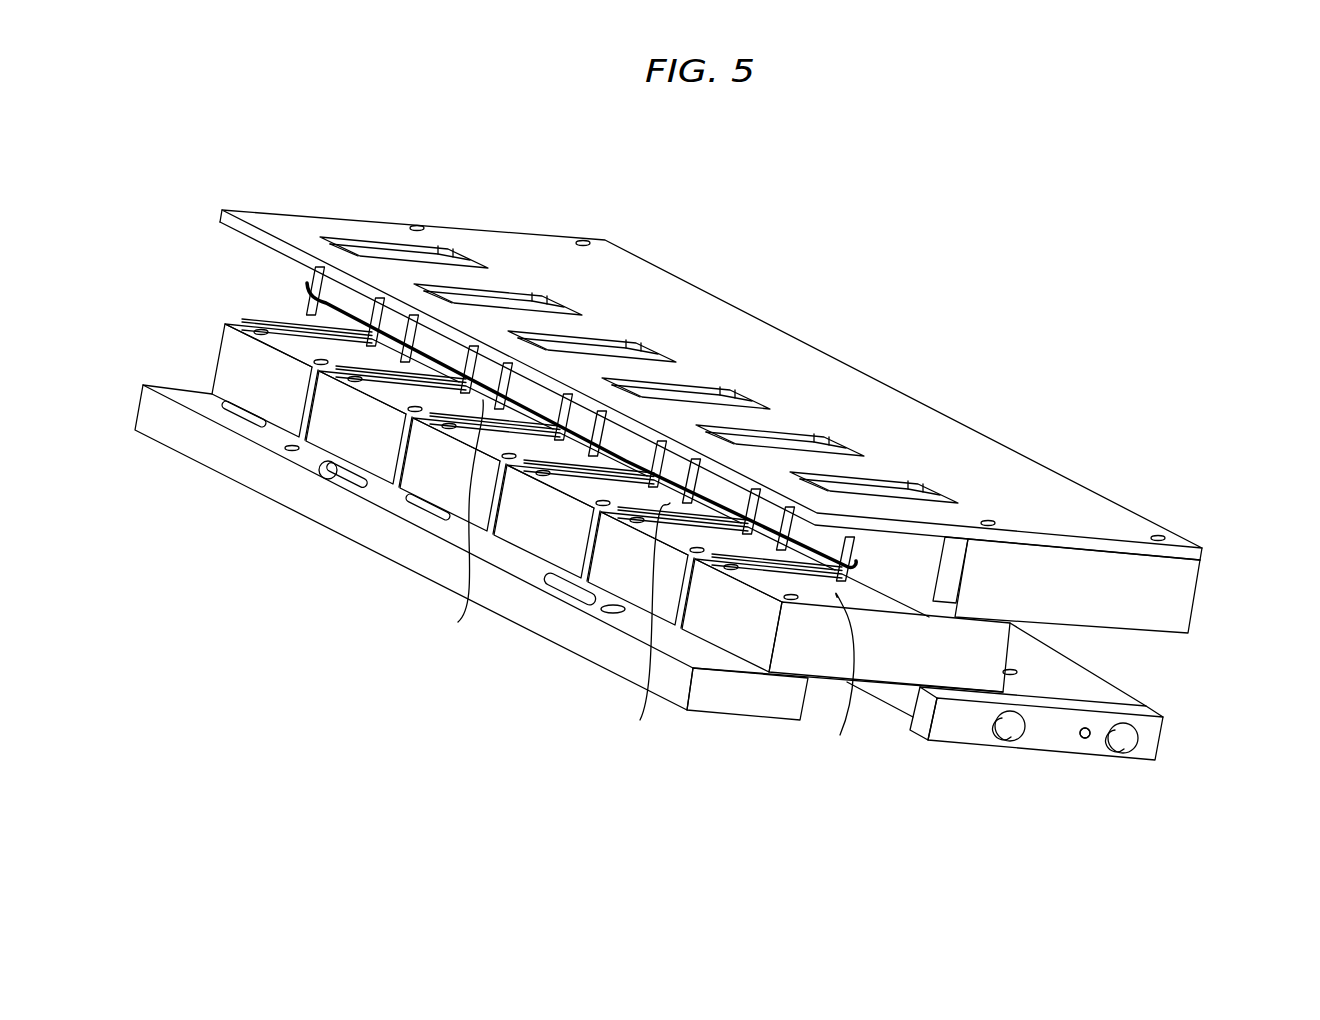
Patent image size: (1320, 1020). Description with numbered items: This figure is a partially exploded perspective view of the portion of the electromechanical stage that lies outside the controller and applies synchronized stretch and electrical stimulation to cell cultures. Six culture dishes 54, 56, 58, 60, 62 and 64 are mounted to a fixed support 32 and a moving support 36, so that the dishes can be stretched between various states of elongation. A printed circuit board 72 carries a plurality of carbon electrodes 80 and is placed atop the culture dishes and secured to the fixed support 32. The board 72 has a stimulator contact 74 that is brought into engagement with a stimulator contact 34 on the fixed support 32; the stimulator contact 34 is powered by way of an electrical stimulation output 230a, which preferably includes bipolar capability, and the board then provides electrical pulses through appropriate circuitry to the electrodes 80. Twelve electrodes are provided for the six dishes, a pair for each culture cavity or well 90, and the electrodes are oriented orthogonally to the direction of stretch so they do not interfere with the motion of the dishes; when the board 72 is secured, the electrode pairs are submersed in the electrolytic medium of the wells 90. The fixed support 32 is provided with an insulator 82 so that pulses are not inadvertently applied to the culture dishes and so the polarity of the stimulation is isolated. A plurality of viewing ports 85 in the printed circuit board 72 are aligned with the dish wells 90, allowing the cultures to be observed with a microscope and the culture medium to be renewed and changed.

The fixed support 32 is at (938, 795).
The stimulator contact 34 is at (1060, 742).
The moving support 36 is at (600, 652).
The culture dish 54 is at (717, 626).
The culture dish 56 is at (623, 579).
The culture dish 58 is at (529, 532).
The culture dish 60 is at (435, 485).
The culture dish 62 is at (341, 438).
The culture dish 64 is at (247, 391).
The printed circuit board 72 is at (880, 373).
The stimulator contact 74 is at (1210, 597).
The electrode 80 is at (626, 464).
The insulator 82 is at (1076, 683).
The viewing port 85 is at (449, 258).
The well 90 is at (320, 342).
The electrical stimulation output 230a is at (1097, 757).